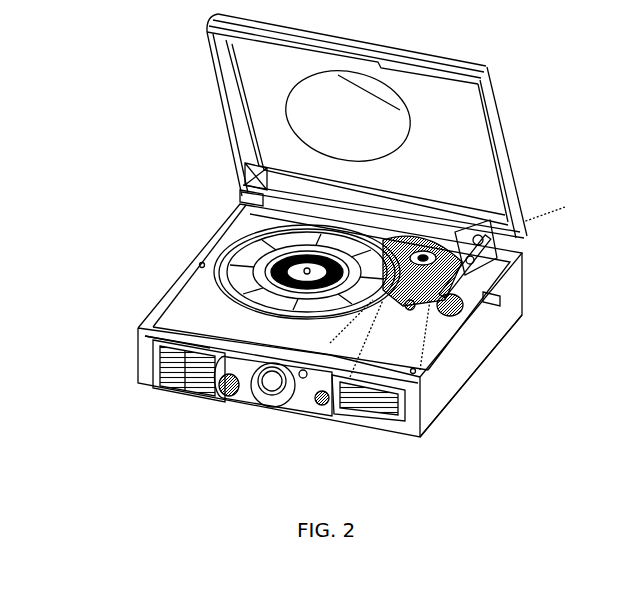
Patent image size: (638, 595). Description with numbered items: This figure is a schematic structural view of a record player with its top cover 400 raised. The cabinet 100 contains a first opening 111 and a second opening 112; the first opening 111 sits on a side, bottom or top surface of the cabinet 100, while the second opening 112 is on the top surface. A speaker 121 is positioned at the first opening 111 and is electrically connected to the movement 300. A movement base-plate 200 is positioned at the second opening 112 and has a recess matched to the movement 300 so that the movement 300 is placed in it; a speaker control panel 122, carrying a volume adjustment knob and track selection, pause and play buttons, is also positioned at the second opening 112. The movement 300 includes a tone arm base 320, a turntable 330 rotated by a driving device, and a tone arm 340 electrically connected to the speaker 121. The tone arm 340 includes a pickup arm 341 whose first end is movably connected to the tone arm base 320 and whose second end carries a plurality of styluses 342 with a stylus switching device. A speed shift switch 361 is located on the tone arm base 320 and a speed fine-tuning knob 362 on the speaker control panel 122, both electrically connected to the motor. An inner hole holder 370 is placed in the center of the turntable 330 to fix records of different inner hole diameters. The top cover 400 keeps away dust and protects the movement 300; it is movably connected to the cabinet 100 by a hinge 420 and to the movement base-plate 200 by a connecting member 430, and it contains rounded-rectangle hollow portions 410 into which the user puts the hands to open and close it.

The cabinet 100 is at (455, 372).
The first opening 111 is at (150, 357).
The second opening 112 is at (155, 305).
The speaker 121 is at (185, 385).
The speaker control panel 122 is at (278, 412).
The movement base-plate 200 is at (180, 280).
The movement 300 is at (160, 322).
The tone arm base 320 is at (325, 412).
The turntable 330 is at (213, 228).
The tone arm 340 is at (505, 268).
The pickup arm 341 is at (493, 300).
The styluses 342 is at (417, 310).
The speed shift switch 361 is at (517, 368).
The speed fine-tuning knob 362 is at (227, 402).
The inner hole holder 370 is at (405, 305).
The top cover 400 is at (495, 130).
The hollow portions 410 is at (207, 82).
The hinge 420 is at (485, 200).
The connecting member 430 is at (236, 194).